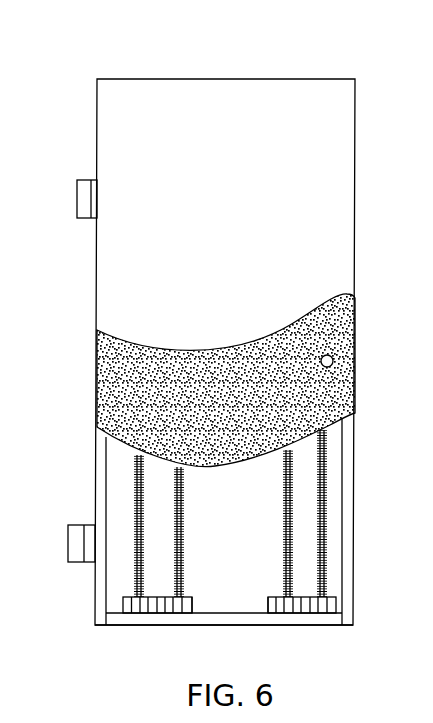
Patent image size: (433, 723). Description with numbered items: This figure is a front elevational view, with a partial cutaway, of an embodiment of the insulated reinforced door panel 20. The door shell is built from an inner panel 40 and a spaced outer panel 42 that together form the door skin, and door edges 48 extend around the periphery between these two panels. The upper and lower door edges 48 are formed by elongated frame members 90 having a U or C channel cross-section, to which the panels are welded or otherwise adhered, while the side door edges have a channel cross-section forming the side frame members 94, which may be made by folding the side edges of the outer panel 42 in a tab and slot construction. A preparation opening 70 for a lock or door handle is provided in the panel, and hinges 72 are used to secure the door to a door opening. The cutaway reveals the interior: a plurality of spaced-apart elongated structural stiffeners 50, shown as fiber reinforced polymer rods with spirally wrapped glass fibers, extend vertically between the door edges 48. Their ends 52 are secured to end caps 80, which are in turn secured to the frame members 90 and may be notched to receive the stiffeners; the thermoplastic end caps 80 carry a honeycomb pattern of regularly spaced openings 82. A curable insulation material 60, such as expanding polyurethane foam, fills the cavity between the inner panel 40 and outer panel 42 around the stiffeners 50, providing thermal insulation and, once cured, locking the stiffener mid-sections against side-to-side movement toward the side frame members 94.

The insulated reinforced door panel 20 is at (92, 75).
The inner panel 40 is at (340, 166).
The outer panel 42 is at (246, 606).
The door edges 48 is at (330, 78).
The structural stiffeners 50 is at (177, 497).
The stiffener ends 52 is at (137, 563).
The insulation material 60 is at (355, 330).
The preparation opening 70 is at (333, 361).
The hinges 72 is at (77, 203).
The end caps 80 is at (267, 603).
The openings 82 is at (123, 600).
The frame members 90 is at (198, 626).
The side frame members 94 is at (355, 453).